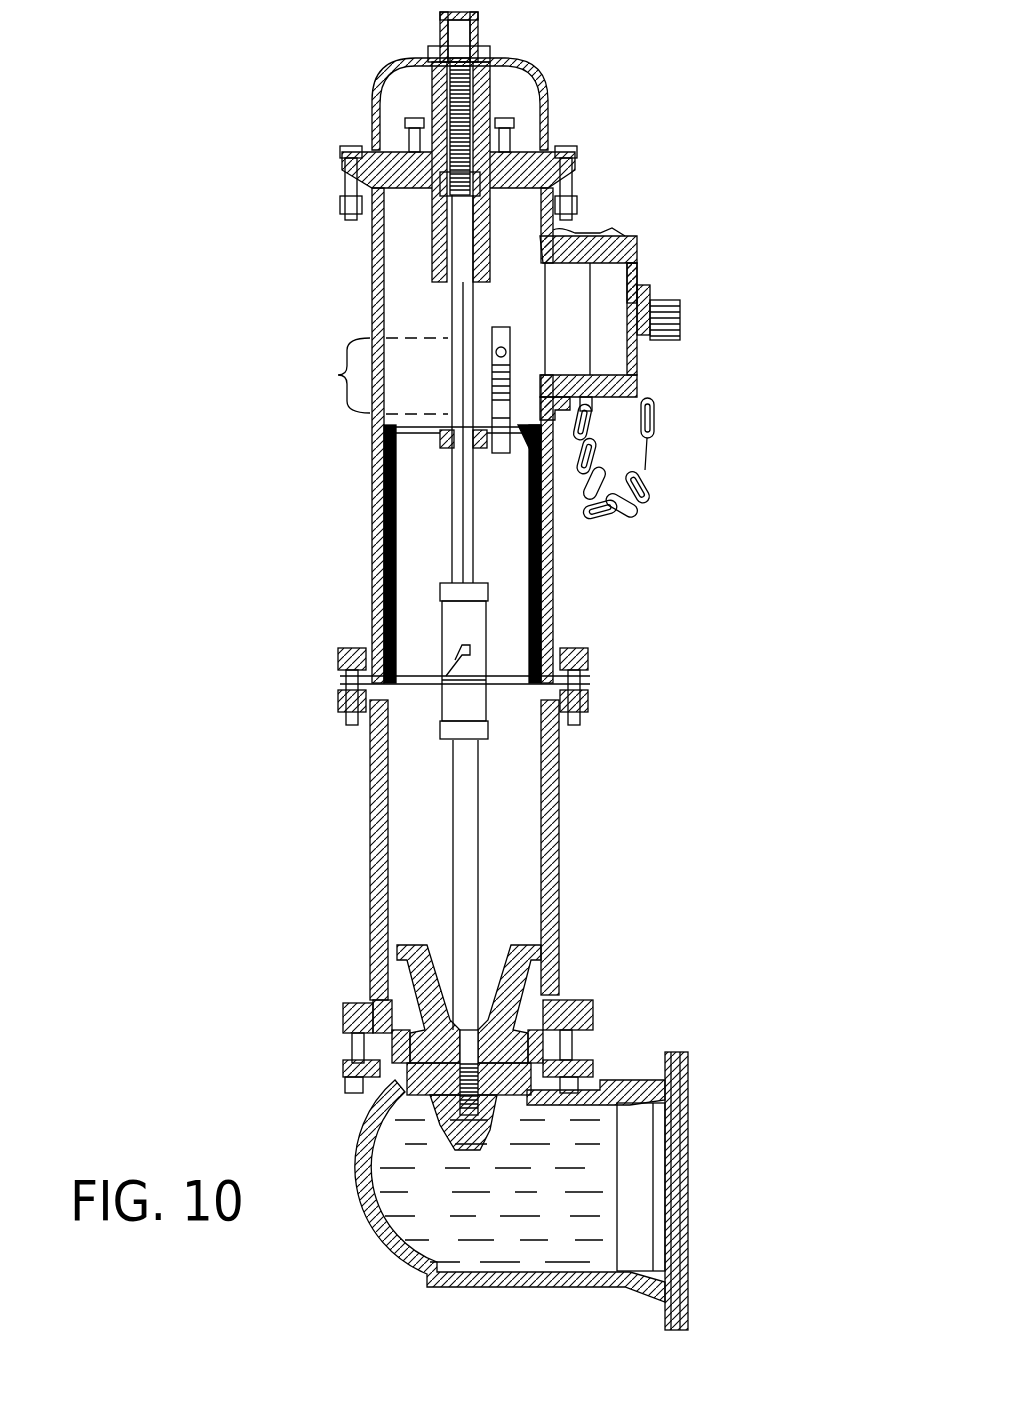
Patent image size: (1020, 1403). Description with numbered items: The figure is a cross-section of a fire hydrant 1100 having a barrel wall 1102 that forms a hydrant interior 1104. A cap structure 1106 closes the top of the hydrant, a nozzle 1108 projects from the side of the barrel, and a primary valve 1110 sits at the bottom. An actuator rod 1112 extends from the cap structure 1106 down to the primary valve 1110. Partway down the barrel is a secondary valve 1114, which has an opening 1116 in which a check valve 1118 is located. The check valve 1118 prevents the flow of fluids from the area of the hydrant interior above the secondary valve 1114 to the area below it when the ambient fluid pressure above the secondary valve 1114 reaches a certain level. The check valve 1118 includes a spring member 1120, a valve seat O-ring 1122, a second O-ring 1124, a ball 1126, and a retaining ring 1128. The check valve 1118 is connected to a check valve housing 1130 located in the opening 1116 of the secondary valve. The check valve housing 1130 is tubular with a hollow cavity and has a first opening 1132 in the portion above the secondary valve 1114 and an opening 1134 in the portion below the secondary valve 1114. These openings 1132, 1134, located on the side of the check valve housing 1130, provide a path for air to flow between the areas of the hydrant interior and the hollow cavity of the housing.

The fire hydrant 1100 is at (461, 666).
The barrel wall 1102 is at (372, 472).
The hydrant interior 1104 is at (408, 557).
The cap structure 1106 is at (512, 95).
The nozzle 1108 is at (605, 243).
The primary valve 1110 is at (560, 988).
The actuator rod 1112 is at (470, 793).
The secondary valve 1114 is at (400, 428).
The opening 1116 is at (553, 413).
The check valve 1118 is at (336, 376).
The spring member 1120 is at (508, 397).
The valve seat O-ring 1122 is at (508, 378).
The second O-ring 1124 is at (508, 363).
The ball 1126 is at (508, 340).
The retaining ring 1128 is at (505, 328).
The check valve housing 1130 is at (477, 453).
The first opening 1132 is at (487, 330).
The opening 1134 is at (541, 463).